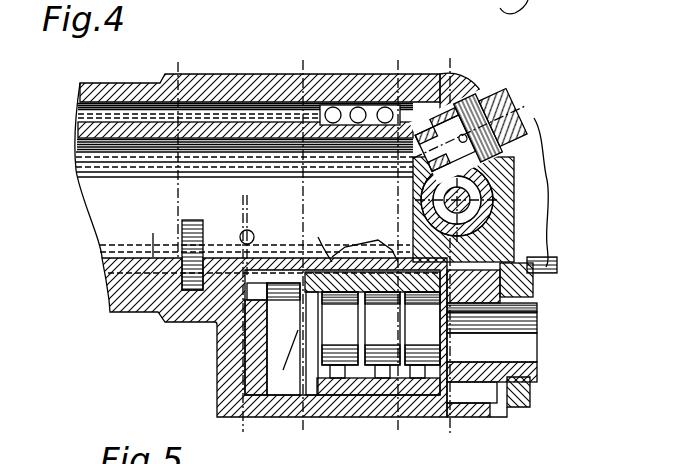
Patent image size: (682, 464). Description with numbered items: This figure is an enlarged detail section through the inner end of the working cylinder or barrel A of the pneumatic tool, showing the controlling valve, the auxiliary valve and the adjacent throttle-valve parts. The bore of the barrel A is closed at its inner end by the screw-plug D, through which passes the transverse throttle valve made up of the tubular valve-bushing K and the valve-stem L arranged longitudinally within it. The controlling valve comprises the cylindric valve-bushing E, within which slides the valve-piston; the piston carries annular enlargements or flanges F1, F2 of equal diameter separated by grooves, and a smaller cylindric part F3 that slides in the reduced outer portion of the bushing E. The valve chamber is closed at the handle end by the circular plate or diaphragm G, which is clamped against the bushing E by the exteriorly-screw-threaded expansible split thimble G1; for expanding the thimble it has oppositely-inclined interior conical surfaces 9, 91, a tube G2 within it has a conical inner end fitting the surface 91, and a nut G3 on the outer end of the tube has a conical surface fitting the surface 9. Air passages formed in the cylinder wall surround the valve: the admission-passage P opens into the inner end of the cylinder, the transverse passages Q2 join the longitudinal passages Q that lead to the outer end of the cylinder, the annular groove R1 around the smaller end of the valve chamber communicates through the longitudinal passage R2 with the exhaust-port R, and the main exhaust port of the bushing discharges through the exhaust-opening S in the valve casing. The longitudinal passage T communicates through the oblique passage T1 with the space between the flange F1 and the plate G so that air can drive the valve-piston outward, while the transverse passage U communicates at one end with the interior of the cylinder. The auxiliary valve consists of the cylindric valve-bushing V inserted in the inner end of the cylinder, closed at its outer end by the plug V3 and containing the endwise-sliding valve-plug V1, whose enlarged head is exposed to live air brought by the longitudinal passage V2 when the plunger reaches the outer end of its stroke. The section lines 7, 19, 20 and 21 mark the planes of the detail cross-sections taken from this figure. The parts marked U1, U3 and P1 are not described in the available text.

The longitudinal passage V2 is at (117, 177).
The section line 20 20 is at (250, 433).
The longitudinal passages Q is at (280, 100).
The transverse passages Q2 is at (385, 107).
The section line 21 21 is at (316, 436).
The section line 7 7 is at (409, 435).
The section line 19 19 is at (456, 435).
The dome lug U3 is at (432, 72).
The working cylinder or barrel A is at (215, 415).
The exhaust-port R is at (192, 222).
The longitudinal passage T is at (141, 229).
The transverse passage U is at (218, 347).
The longitudinal passage R2 is at (254, 243).
The valve-bushing E is at (319, 231).
The cylinder admission-passage P is at (395, 245).
The lug U1 is at (412, 165).
The valve-bushing V is at (514, 190).
The plug V3 is at (530, 76).
The valve-plug V1 is at (481, 97).
The valve-stem L is at (514, 202).
The screw-plug D is at (500, 210).
The tubular valve-bushing K is at (530, 250).
The interior conical surface 9 is at (528, 266).
The nut G3 is at (538, 296).
The interior conical surface 91 is at (545, 313).
The circular plate or diaphragm G is at (445, 337).
The oblique passage T1 is at (513, 343).
The tube G2 is at (530, 358).
The split thimble G1 is at (500, 413).
The annular groove or recess R1 is at (285, 339).
The exhaust-opening S is at (330, 408).
The cylindric part F3 is at (340, 335).
The annular enlargement or flange F2 is at (382, 335).
The annular enlargement or flange F1 is at (422, 335).
The pin P1 is at (266, 448).